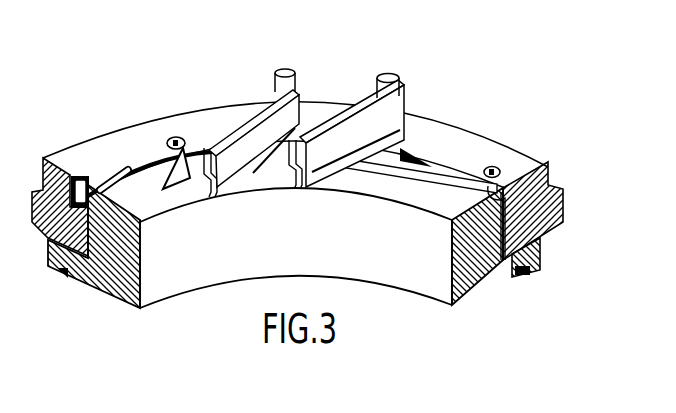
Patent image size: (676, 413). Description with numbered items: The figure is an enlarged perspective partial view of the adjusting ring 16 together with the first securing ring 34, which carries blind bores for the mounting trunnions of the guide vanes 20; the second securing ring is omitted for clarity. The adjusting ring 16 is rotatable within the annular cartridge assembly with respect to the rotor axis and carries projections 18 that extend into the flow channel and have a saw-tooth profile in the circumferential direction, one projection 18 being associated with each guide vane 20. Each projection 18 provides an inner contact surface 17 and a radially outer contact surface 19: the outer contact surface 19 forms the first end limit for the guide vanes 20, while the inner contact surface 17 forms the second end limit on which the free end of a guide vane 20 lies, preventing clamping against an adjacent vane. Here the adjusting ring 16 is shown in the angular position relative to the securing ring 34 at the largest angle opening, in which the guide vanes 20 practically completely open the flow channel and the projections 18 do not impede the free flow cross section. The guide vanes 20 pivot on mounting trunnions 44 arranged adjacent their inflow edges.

The first securing ring 34 is at (115, 147).
The adjusting ring 16 is at (114, 278).
The outer contact surface 19 is at (157, 160).
The inner contact surface 17 is at (205, 158).
The projection 18 is at (407, 148).
The guide vane 20 is at (268, 98).
The mounting trunnion 44 is at (292, 82).